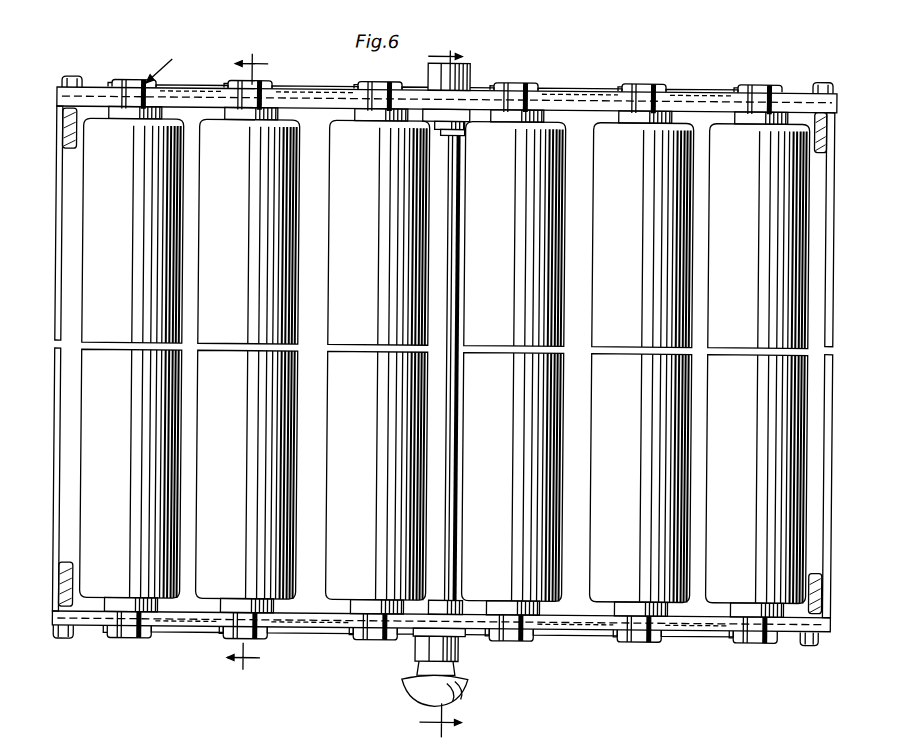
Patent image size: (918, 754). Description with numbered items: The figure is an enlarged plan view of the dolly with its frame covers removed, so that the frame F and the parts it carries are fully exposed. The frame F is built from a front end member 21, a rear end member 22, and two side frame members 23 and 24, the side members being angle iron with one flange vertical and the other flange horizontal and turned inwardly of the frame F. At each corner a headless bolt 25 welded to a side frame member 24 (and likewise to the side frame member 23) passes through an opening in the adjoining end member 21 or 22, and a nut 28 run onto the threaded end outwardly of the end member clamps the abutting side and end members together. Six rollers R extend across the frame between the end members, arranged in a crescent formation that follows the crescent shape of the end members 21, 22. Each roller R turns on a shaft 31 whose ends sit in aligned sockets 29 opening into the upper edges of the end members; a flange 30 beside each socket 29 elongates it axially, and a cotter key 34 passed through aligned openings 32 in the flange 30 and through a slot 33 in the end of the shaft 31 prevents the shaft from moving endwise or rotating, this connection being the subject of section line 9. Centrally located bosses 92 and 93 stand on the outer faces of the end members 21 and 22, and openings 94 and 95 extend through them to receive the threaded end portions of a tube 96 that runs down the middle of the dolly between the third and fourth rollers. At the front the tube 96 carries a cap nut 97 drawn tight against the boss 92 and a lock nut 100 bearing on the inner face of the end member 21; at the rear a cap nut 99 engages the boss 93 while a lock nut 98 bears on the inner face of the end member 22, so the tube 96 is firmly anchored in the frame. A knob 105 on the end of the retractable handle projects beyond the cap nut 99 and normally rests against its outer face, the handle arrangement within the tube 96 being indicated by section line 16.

The frame F is at (159, 61).
The section line 9- 9 is at (248, 363).
The section line 16- 16 is at (432, 401).
The front end member 21 is at (337, 632).
The rear end member 22 is at (305, 92).
The side frame member 23 is at (806, 228).
The side frame member 24 is at (62, 284).
The headless bolt 25 is at (70, 580).
The nut 28 is at (65, 642).
The socket 29 is at (552, 91).
The flange 30 is at (541, 85).
The shaft 31 is at (512, 82).
The aligned openings 32 is at (668, 84).
The slot 33 is at (648, 86).
The cotter key 34 is at (266, 80).
The boss 92 is at (466, 84).
The boss 93 is at (452, 629).
The opening 94 is at (468, 92).
The opening 95 is at (416, 636).
The tube 96 is at (447, 312).
The cap nut 97 is at (462, 58).
The lock nut 98 is at (434, 606).
The cap nut 99 is at (466, 652).
The lock nut 100 is at (452, 130).
The knob 105 is at (432, 691).
The rollers R is at (444, 361).